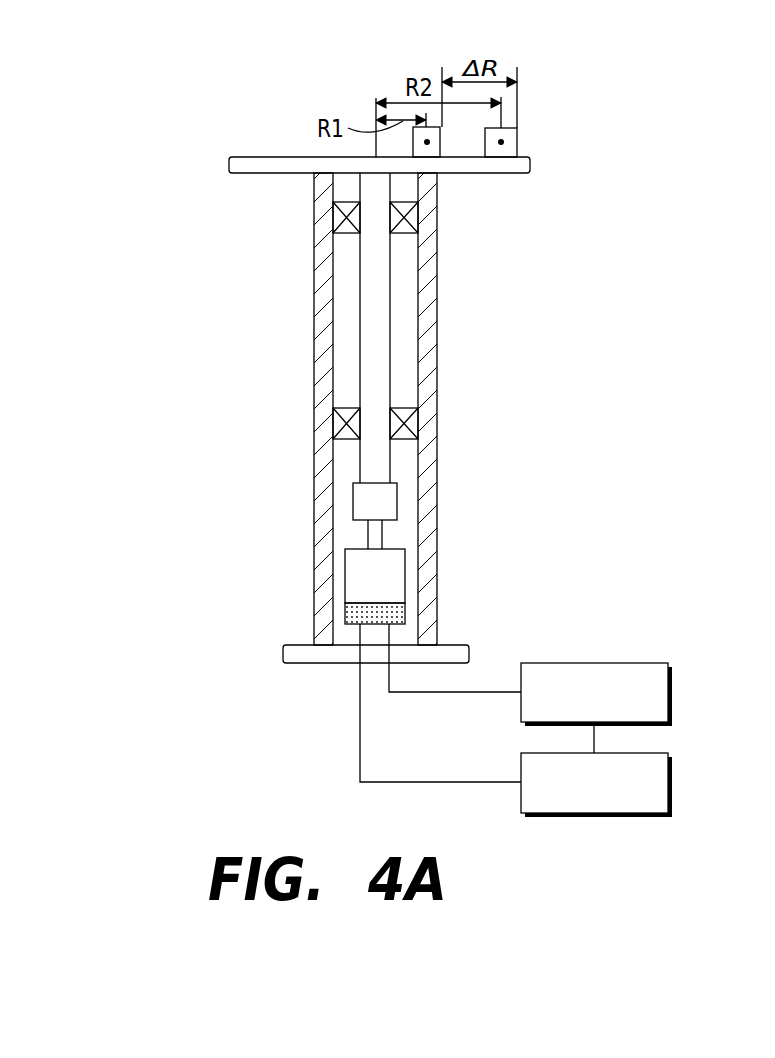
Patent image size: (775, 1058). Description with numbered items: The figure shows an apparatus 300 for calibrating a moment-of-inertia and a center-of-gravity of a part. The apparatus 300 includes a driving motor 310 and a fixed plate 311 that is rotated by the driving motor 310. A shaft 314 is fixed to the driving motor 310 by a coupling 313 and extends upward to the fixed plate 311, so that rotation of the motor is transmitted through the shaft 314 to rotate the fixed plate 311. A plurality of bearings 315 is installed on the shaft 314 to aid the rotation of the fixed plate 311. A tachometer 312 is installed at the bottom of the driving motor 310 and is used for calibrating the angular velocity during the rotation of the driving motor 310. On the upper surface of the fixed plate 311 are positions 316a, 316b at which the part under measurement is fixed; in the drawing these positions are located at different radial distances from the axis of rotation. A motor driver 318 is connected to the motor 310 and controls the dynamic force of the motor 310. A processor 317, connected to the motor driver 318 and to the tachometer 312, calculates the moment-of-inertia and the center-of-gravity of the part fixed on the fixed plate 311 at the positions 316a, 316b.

The apparatus for calibrating a moment-of-inertia and a center-of-gravity 300 is at (600, 150).
The fixed plate 311 is at (523, 174).
The shaft 314 is at (370, 306).
The bearings 315 is at (338, 216).
The coupling 313 is at (362, 500).
The driving motor 310 is at (356, 573).
The tachometer 312 is at (345, 613).
The position 316a is at (437, 147).
The position 316b is at (510, 141).
The motor driver 318 is at (668, 690).
The processor 317 is at (668, 783).